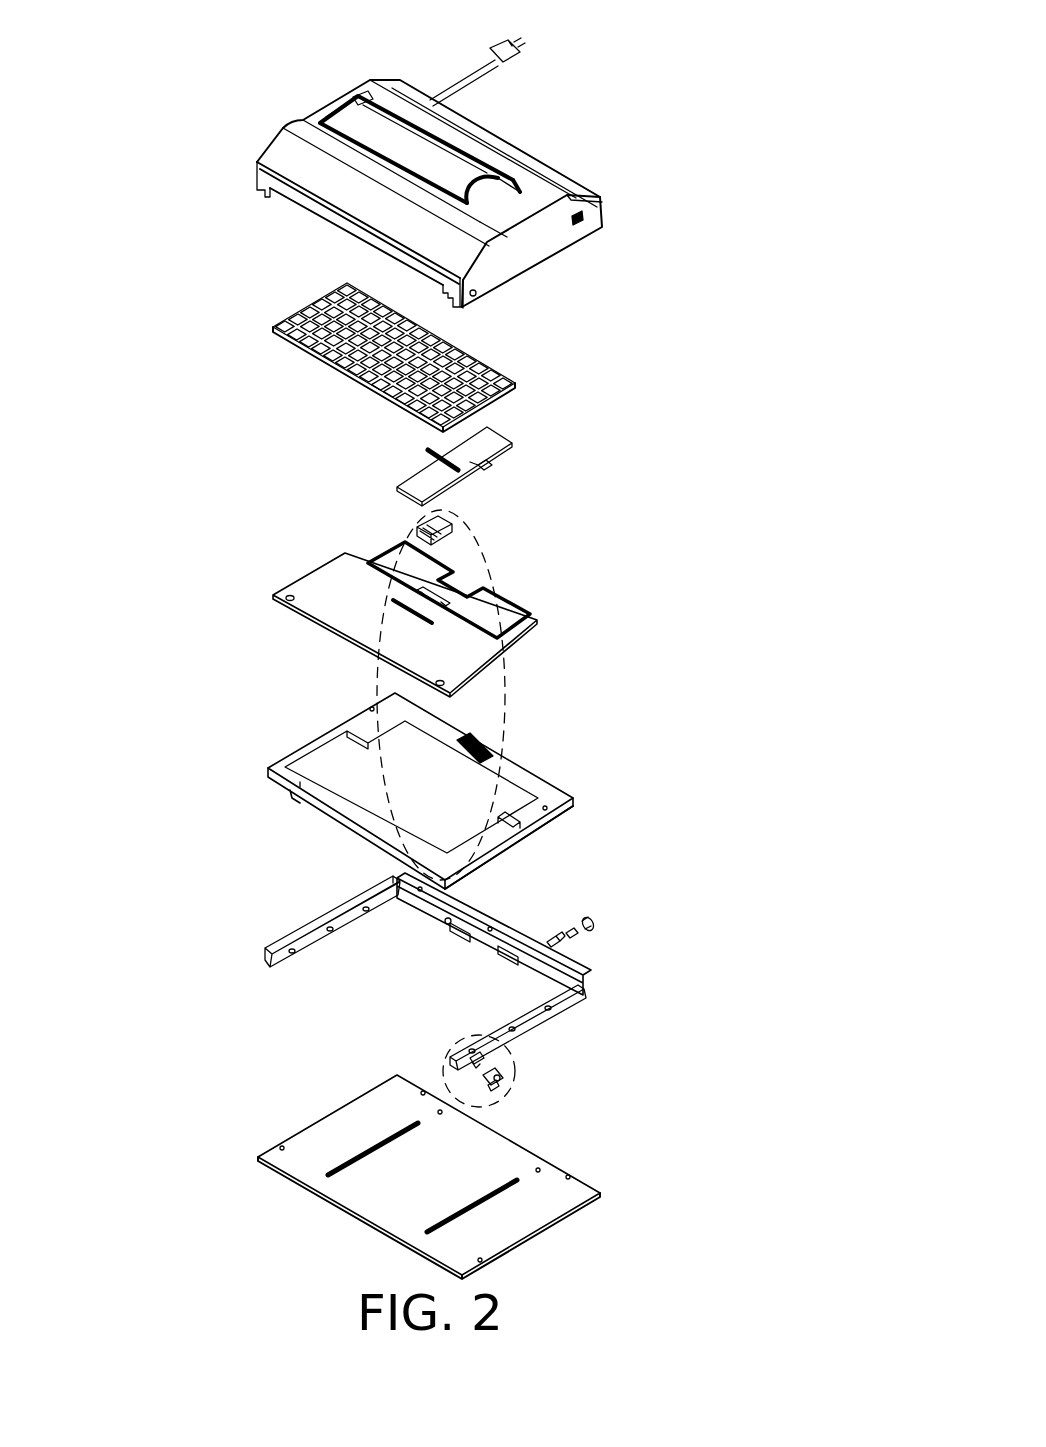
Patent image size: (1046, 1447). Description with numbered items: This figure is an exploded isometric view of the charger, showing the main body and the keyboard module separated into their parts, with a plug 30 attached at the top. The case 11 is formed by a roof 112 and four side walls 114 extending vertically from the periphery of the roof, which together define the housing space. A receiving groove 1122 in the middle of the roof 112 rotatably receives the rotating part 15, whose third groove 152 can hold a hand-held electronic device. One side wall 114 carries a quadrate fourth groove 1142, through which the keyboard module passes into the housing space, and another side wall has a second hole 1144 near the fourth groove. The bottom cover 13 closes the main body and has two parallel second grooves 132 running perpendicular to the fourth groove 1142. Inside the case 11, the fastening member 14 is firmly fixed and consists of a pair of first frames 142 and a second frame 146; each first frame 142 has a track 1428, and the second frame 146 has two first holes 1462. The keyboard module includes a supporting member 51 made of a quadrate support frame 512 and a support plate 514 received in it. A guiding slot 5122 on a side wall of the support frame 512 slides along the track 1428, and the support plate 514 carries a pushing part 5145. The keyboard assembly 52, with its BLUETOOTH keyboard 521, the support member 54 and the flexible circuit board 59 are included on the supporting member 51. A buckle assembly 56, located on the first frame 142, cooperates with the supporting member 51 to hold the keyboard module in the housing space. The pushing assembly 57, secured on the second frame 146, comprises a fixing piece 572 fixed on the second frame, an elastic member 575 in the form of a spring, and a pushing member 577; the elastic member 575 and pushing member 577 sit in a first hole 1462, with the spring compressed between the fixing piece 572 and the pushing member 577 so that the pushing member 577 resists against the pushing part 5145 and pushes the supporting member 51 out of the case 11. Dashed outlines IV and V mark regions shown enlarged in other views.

The case 11 is at (467, 128).
The roof 112 is at (523, 202).
The receiving groove 1122 is at (493, 185).
The side walls 114 is at (547, 242).
The fourth groove 1142 is at (295, 208).
The second hole 1144 is at (478, 296).
The rotating part 15 is at (347, 118).
The third groove 152 is at (383, 103).
The plug 30 is at (463, 73).
The keyboard assembly 52 is at (347, 354).
The keyboard 521 is at (310, 330).
The flexible circuit board 59 is at (480, 440).
The support member 54 is at (445, 533).
The supporting member 51 is at (491, 715).
The support plate 514 is at (465, 619).
The pushing part 5145 is at (513, 598).
The support frame 512 is at (490, 791).
The guiding slot 5122 is at (560, 800).
The fastening member 14 is at (515, 964).
The second frame 146 is at (532, 941).
The first holes 1462 is at (510, 958).
The first frames 142 is at (545, 1030).
The track 1428 is at (305, 950).
The pushing assembly 57 is at (445, 922).
The pushing member 577 is at (556, 932).
The elastic member 575 is at (580, 937).
The fixing piece 572 is at (594, 924).
The buckle assembly 56 is at (498, 1095).
The bottom cover 13 is at (390, 1177).
The second grooves 132 is at (345, 1165).
The detail region IV is at (375, 683).
The detail region V is at (515, 1070).